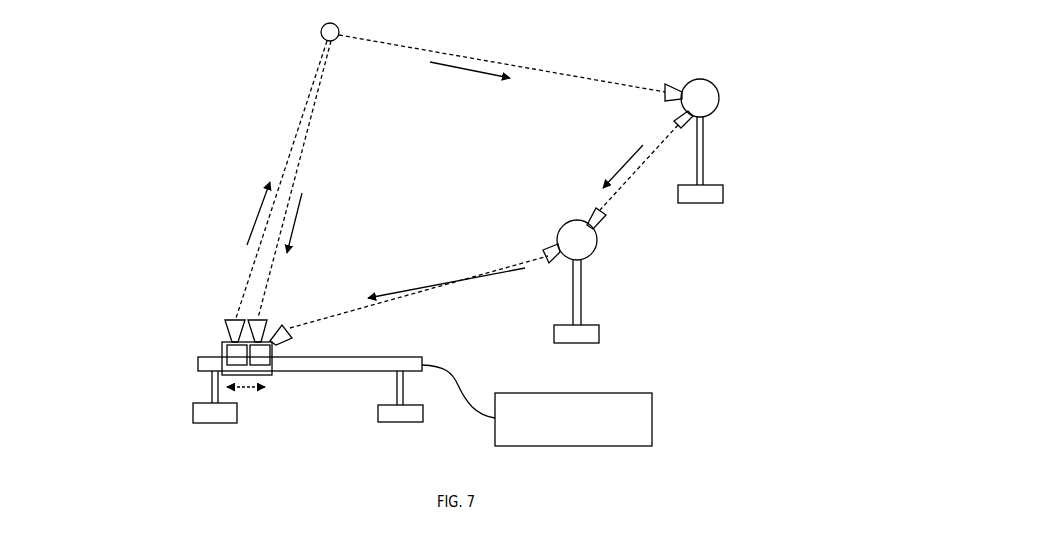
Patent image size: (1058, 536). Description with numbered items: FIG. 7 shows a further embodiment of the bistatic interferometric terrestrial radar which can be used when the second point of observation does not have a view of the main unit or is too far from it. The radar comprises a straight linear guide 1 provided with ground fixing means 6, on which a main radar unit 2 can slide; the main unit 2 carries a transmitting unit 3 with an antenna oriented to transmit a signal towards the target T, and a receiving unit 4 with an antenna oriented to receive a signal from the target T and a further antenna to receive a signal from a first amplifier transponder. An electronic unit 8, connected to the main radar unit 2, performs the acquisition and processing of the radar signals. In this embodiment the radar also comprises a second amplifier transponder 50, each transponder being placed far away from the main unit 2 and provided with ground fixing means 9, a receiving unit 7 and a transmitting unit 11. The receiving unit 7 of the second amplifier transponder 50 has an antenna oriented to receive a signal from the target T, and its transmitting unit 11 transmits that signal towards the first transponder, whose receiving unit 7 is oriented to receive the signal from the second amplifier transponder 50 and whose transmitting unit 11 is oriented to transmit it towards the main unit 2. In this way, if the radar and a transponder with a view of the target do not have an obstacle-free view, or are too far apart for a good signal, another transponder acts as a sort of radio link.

The target T is at (321, 34).
The linear guide 1 is at (352, 358).
The main radar unit 2 is at (257, 368).
The transmitting unit 3 is at (236, 328).
The receiving unit 4 is at (260, 348).
The ground fixing means 6 is at (237, 412).
The receiving unit 7 is at (668, 85).
The electronic unit 8 is at (537, 405).
The ground fixing means 9 is at (700, 150).
The transmitting unit 11 is at (675, 117).
The second amplifier transponder 50 is at (700, 100).